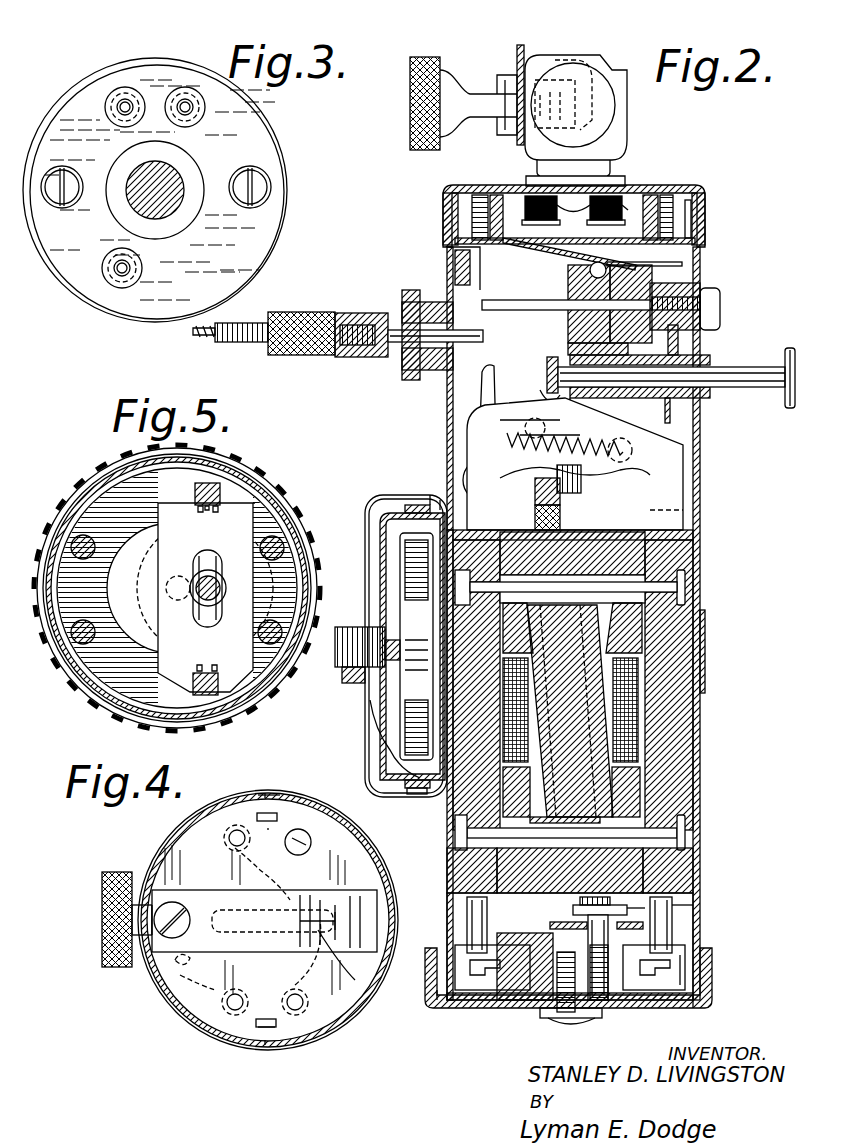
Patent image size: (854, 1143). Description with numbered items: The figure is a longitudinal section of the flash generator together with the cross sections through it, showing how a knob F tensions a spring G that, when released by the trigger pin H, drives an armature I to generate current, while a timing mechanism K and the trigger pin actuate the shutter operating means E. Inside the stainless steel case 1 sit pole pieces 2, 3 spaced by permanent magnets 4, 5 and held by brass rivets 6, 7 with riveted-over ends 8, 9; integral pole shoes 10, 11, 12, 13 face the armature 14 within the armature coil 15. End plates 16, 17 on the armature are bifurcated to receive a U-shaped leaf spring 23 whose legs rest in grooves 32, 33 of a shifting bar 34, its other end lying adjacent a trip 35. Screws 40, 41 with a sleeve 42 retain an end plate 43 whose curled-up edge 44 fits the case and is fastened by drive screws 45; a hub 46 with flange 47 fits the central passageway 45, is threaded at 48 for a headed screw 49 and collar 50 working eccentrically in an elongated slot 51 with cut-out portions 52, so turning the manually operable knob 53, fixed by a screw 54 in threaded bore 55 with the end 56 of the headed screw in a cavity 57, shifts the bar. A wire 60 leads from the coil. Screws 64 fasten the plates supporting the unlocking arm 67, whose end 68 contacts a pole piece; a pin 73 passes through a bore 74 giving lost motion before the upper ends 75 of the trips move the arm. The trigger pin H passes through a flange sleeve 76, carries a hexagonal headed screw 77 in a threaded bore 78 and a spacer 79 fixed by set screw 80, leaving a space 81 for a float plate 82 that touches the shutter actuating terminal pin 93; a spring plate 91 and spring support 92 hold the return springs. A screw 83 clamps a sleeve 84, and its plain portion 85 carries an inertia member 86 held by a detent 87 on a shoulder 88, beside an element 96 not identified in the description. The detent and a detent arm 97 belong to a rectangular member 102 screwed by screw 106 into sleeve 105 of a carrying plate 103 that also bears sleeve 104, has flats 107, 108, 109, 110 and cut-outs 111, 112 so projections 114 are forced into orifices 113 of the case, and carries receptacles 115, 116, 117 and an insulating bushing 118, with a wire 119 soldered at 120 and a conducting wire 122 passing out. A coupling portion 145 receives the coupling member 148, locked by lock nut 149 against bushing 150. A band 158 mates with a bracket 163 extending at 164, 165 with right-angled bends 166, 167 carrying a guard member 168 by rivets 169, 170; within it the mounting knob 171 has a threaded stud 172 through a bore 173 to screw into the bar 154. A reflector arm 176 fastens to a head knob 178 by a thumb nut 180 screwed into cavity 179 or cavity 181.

In FIG. 2, the main case 1 is at (700, 510).
In FIG. 2, the pole piece 2 is at (690, 808).
In FIG. 2, the pole piece 3 is at (445, 815).
In FIG. 2, the permanent magnet 4 is at (572, 553).
In FIG. 2, the permanent magnet 5 is at (570, 870).
In FIG. 2, the metallic rivet 6 is at (700, 588).
In FIG. 2, the metallic rivet 7 is at (690, 848).
In FIG. 2, the riveted-over end 8 is at (476, 684).
In FIG. 2, the riveted-over end 9 is at (472, 870).
In FIG. 2, the pole shoe 10 is at (624, 628).
In FIG. 2, the pole shoe 11 is at (627, 792).
In FIG. 2, the pole shoe 12 is at (518, 628).
In FIG. 2, the pole shoe 13 is at (516, 792).
In FIG. 2, the armature 14 is at (570, 711).
In FIG. 2, the armature coil 15 is at (630, 707).
In FIG. 2, the armature end plate 16 is at (545, 565).
In FIG. 2, the armature end plate 17 is at (615, 812).
In FIG. 5, the U-shaped leaf spring 23 is at (158, 503).
In FIG. 2, the U-shaped leaf spring 23 is at (537, 504).
In FIG. 5, the groove 32 is at (235, 490).
In FIG. 5, the groove 33 is at (192, 695).
In FIG. 5, the shifting bar 34 is at (250, 520).
In FIG. 2, the shifting bar 34 is at (690, 900).
In FIG. 2, the trip 35 is at (640, 485).
In FIG. 5, the screw 40 is at (275, 645).
In FIG. 2, the screw 40 is at (660, 990).
In FIG. 5, the screw 41 is at (70, 648).
In FIG. 2, the screw 41 is at (460, 985).
In FIG. 2, the sleeve 42 is at (465, 915).
In FIG. 2, the end plate 43 is at (690, 940).
In FIG. 2, the curled-up edge 44 is at (690, 1008).
In FIG. 2, the central receiving passageway 45 is at (500, 1012).
In FIG. 2, the hub 46 is at (520, 975).
In FIG. 5, the flange 47 is at (150, 526).
In FIG. 2, the flange 47 is at (500, 935).
In FIG. 2, the screw-threaded portion 48 is at (654, 971).
In FIG. 5, the headed screw 49 is at (225, 602).
In FIG. 2, the headed screw 49 is at (600, 897).
In FIG. 5, the collar 50 is at (215, 570).
In FIG. 2, the collar 50 is at (640, 905).
In FIG. 5, the elongated slot 51 is at (196, 580).
In FIG. 2, the elongated slot 51 is at (573, 910).
In FIG. 5, the cut-out portion 52 is at (212, 592).
In FIG. 5, the manually operable knob 53 is at (143, 456).
In FIG. 2, the manually operable knob 53 is at (712, 1000).
In FIG. 2, the screw 54 is at (590, 1022).
In FIG. 2, the screw-threaded bore 55 is at (550, 925).
In FIG. 2, the end of screw 56 is at (612, 1005).
In FIG. 2, the cavity 57 is at (558, 1015).
In FIG. 4, the wire 60 is at (290, 815).
In FIG. 2, the screw 64 is at (695, 495).
In FIG. 2, the unlocking arm 67 is at (685, 475).
In FIG. 2, the end of unlocking arm 68 is at (700, 535).
In FIG. 2, the pin 73 is at (470, 440).
In FIG. 2, the bore 74 is at (515, 458).
In FIG. 2, the upper end of trip 75 is at (480, 390).
In FIG. 2, the flange sleeve 76 is at (700, 425).
In FIG. 2, the hexagonal headed screw 77 is at (487, 400).
In FIG. 2, the threaded bore 78 is at (620, 400).
In FIG. 2, the spacer member 79 is at (665, 412).
In FIG. 2, the set screw 80 is at (598, 336).
In FIG. 2, the space 81 is at (545, 400).
In FIG. 2, the float plate 82 is at (550, 360).
In FIG. 2, the screw 83 is at (722, 312).
In FIG. 2, the sleeve 84 is at (700, 290).
In FIG. 2, the projecting plain portion 85 is at (482, 300).
In FIG. 2, the inertia member 86 is at (589, 304).
In FIG. 4, the detent 87 is at (330, 950).
In FIG. 2, the detent 87 is at (621, 302).
In FIG. 2, the shoulder 88 is at (615, 265).
In FIG. 2, the spring plate 91 is at (580, 400).
In FIG. 2, the spring support 92 is at (680, 340).
In FIG. 2, the shutter actuating terminal pin 93 is at (495, 338).
In FIG. 2, the spring 96 is at (705, 312).
In FIG. 4, the detent arm 97 is at (352, 895).
In FIG. 2, the detent arm 97 is at (685, 263).
In FIG. 4, the rectangular member 102 is at (260, 900).
In FIG. 4, the carrying plate 103 is at (170, 865).
In FIG. 2, the carrying plate 103 is at (600, 210).
In FIG. 4, the threaded sleeve 104 is at (370, 995).
In FIG. 2, the threaded sleeve 104 is at (660, 200).
In FIG. 2, the threaded sleeve 105 is at (448, 196).
In FIG. 4, the screw 106 is at (160, 910).
In FIG. 2, the screw 106 is at (455, 262).
In FIG. 4, the flat 107 is at (270, 810).
In FIG. 4, the flat 108 is at (385, 975).
In FIG. 4, the flat 109 is at (280, 1040).
In FIG. 4, the flat 110 is at (135, 935).
In FIG. 4, the cut-out portion 111 is at (303, 830).
In FIG. 4, the cut-out portion 112 is at (255, 1030).
In FIG. 4, the orifice 113 is at (255, 795).
In FIG. 2, the orifice 113 is at (700, 225).
In FIG. 4, the tiny projection 114 is at (266, 795).
In FIG. 3, the plug receiving insulating receptacle 115 is at (118, 282).
In FIG. 4, the plug receiving insulating receptacle 115 is at (230, 845).
In FIG. 3, the plug receiving insulating receptacle 116 is at (200, 110).
In FIG. 4, the plug receiving insulating receptacle 116 is at (325, 1050).
In FIG. 3, the plug receiving insulating receptacle 117 is at (118, 90).
In FIG. 4, the plug receiving insulating receptacle 117 is at (225, 1015).
In FIG. 3, the insulating bushing 118 is at (186, 94).
In FIG. 4, the wire 119 is at (190, 985).
In FIG. 2, the wire 119 is at (510, 193).
In FIG. 4, the soldering point 120 is at (175, 975).
In FIG. 4, the electrically conducting wire 122 is at (320, 970).
In FIG. 2, the electrically conducting wire 122 is at (625, 200).
In FIG. 2, the coupling portion 145 is at (374, 313).
In FIG. 2, the coupling member 148 is at (300, 312).
In FIG. 2, the threaded lock nut 149 is at (402, 368).
In FIG. 2, the bushing 150 is at (415, 302).
In FIG. 2, the bar 154 is at (348, 683).
In FIG. 2, the band 158 is at (706, 650).
In FIG. 2, the bracket 163 is at (425, 630).
In FIG. 2, the lengthwise extension 164 is at (440, 510).
In FIG. 2, the lengthwise extension 165 is at (405, 785).
In FIG. 2, the right-angled bend 166 is at (410, 505).
In FIG. 2, the right-angled bend 167 is at (372, 740).
In FIG. 2, the guard member 168 is at (368, 530).
In FIG. 2, the rivet 169 is at (420, 500).
In FIG. 2, the rivet 170 is at (412, 794).
In FIG. 2, the mounting knob 171 is at (383, 575).
In FIG. 2, the threaded stud 172 is at (360, 628).
In FIG. 2, the through bore 173 is at (388, 640).
In FIG. 2, the reflector arm 176 is at (518, 50).
In FIG. 2, the head knob 178 is at (628, 108).
In FIG. 2, the cavity 179 is at (545, 80).
In FIG. 4, the thumb nut 180 is at (102, 878).
In FIG. 2, the thumb nut 180 is at (410, 103).
In FIG. 2, the cavity 181 is at (590, 55).
In FIG. 2, the shutter operating means E is at (236, 352).
In FIG. 2, the trigger pin H is at (790, 438).
In FIG. 2, the timing mechanism K is at (540, 275).
In FIG. 2, the spring G is at (695, 868).
In FIG. 2, the knob F is at (745, 975).
In FIG. 2, the armature I is at (668, 730).